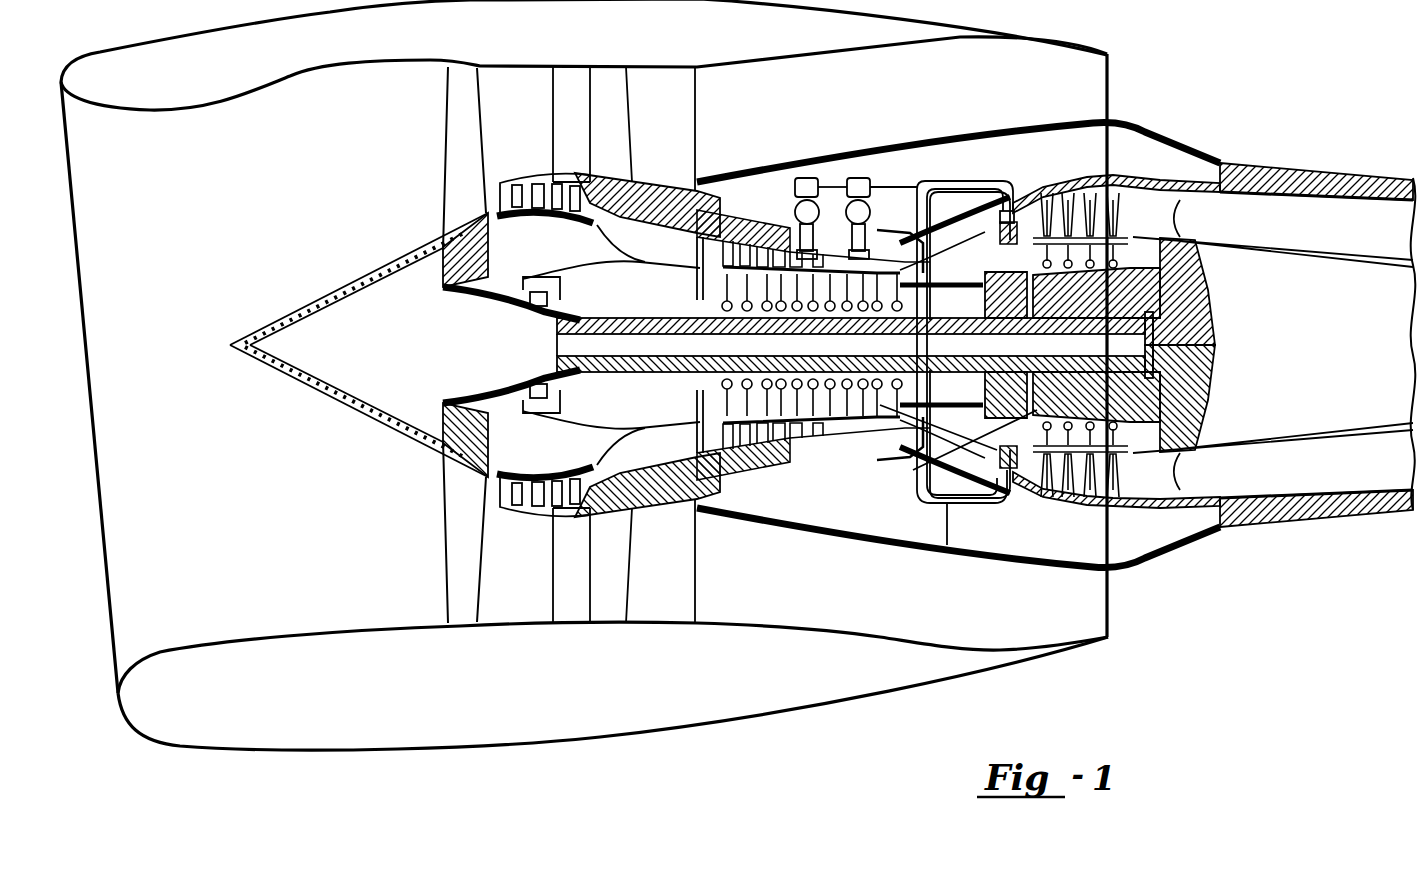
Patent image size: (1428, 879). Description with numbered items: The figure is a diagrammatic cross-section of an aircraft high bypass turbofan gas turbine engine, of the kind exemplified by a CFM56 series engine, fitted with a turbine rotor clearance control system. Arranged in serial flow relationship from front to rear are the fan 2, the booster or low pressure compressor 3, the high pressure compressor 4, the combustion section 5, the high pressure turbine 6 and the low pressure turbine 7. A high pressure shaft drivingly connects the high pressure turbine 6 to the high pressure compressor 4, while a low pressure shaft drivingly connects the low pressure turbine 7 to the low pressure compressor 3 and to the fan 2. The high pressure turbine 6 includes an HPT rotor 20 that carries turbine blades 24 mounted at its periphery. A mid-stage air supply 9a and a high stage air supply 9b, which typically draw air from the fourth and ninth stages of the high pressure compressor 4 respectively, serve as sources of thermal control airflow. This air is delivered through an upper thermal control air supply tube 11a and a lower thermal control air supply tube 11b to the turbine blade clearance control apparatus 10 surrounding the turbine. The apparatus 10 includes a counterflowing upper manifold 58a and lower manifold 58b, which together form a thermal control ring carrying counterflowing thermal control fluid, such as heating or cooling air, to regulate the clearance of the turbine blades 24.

The fan 2 is at (460, 143).
The booster or low pressure compressor 3 is at (553, 177).
The high pressure compressor 4 is at (783, 240).
The combustion section 5 is at (948, 247).
The high pressure turbine 6 is at (967, 228).
The low pressure turbine 7 is at (1103, 175).
The mid-stage air supply 9a is at (818, 216).
The high stage air supply 9b is at (866, 210).
The turbine blade clearance control apparatus 10 is at (1037, 190).
The upper thermal control air supply tube 11a is at (985, 200).
The lower thermal control air supply tube 11b is at (947, 545).
The HPT rotor 20 is at (917, 482).
The turbine blades 24 is at (1037, 485).
The upper manifold 58a is at (1028, 212).
The lower manifold 58b is at (1030, 482).